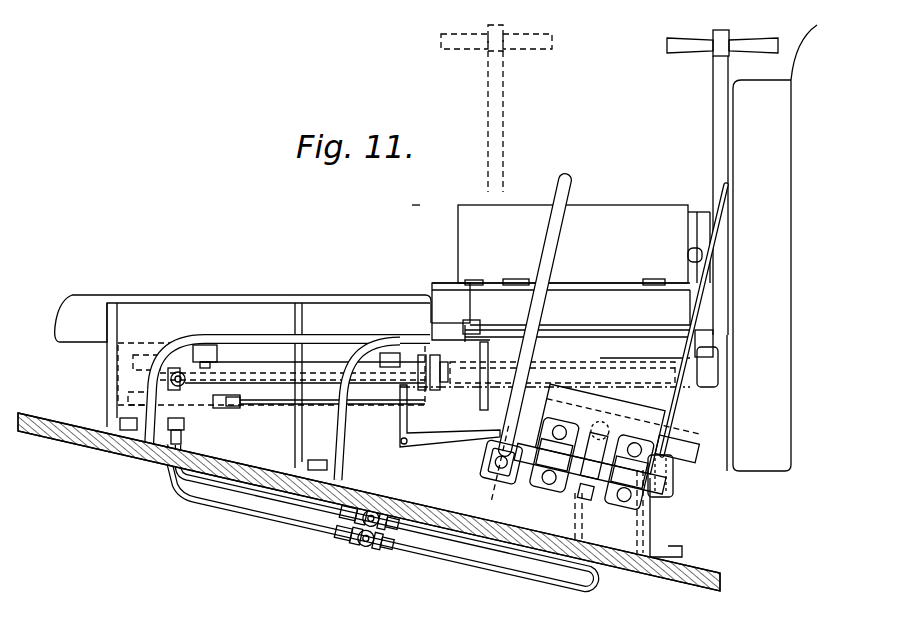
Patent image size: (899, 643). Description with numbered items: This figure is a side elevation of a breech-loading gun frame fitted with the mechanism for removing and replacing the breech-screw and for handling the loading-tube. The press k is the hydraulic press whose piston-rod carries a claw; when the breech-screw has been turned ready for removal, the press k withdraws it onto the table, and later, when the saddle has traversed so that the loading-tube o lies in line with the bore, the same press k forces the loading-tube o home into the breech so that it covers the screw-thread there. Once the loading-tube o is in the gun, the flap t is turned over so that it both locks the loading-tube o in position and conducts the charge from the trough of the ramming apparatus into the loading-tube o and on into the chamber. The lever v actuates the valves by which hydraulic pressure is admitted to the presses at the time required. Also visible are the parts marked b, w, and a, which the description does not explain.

The loading-tube o is at (584, 244).
The flap t is at (561, 302).
The rod b is at (577, 333).
The press k is at (271, 374).
The plate w is at (598, 467).
The lever v is at (522, 332).
The mark a is at (416, 207).